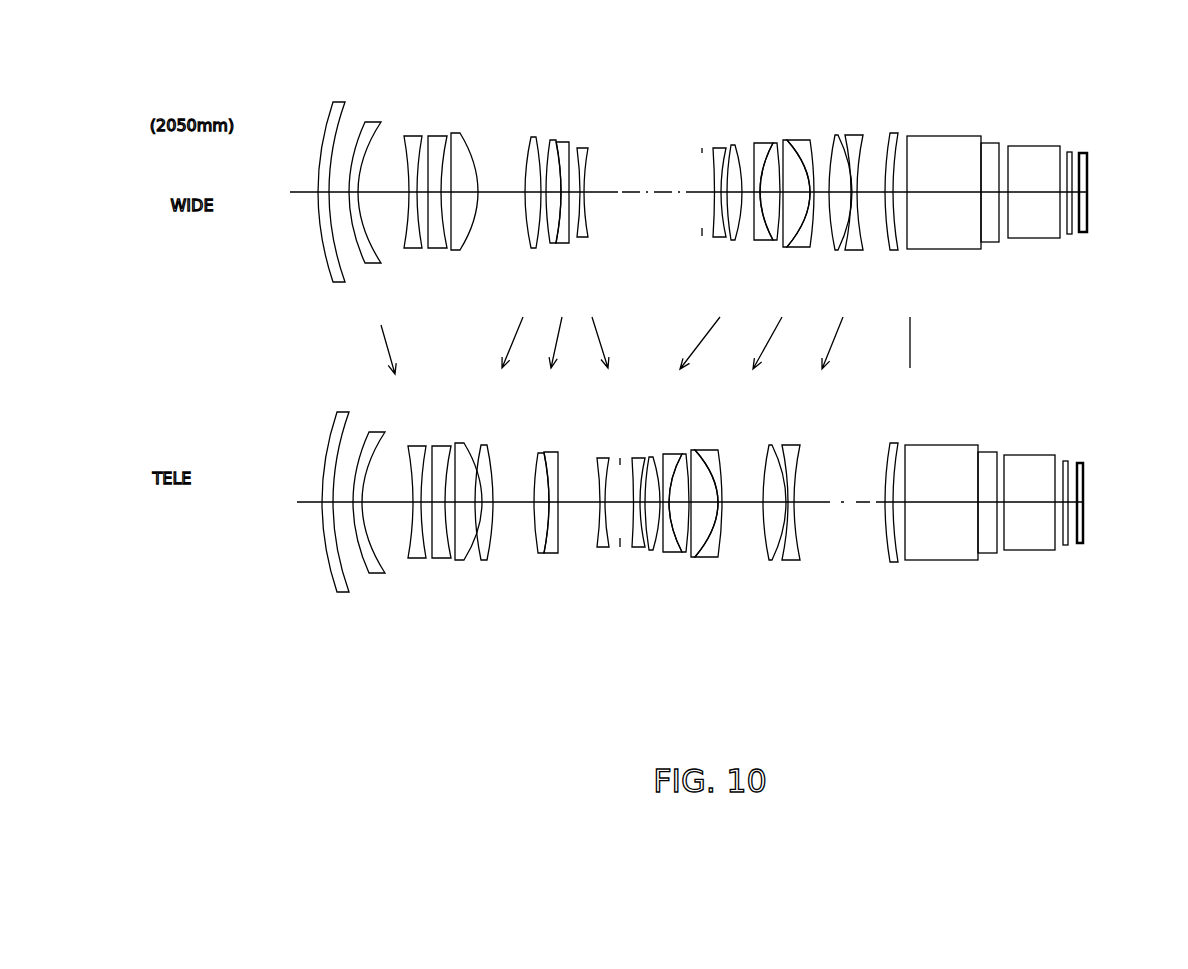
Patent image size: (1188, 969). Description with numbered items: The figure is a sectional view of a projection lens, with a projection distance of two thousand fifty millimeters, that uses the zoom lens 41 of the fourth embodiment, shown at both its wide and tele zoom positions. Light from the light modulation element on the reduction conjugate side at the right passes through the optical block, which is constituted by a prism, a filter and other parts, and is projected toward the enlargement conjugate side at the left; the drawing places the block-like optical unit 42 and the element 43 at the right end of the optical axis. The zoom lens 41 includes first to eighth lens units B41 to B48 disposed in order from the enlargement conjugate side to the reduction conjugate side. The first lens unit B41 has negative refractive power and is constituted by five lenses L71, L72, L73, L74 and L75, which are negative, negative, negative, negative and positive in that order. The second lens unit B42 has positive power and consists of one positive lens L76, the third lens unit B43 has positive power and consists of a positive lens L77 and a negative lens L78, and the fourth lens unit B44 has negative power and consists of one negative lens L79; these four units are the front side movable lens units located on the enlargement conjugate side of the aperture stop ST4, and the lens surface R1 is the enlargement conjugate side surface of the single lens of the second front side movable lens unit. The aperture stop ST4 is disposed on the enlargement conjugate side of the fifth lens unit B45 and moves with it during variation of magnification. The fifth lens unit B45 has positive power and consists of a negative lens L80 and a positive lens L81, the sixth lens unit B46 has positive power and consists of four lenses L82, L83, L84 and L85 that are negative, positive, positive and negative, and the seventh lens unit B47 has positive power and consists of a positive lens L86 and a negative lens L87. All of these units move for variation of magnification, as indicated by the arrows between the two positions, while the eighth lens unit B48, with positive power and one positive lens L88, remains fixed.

The negative lens L71 is at (340, 102).
The negative lens L72 is at (373, 122).
The negative lens L73 is at (410, 136).
The negative lens L74 is at (443, 136).
The positive lens L75 is at (456, 133).
The positive lens L76 is at (537, 137).
The positive lens L77 is at (553, 140).
The negative lens L78 is at (567, 142).
The negative lens L79 is at (590, 148).
The negative lens L80 is at (715, 148).
The positive lens L81 is at (732, 145).
The negative lens L82 is at (760, 143).
The positive lens L83 is at (777, 143).
The positive lens L84 is at (785, 140).
The negative lens L85 is at (800, 140).
The positive lens L86 is at (835, 135).
The negative lens L87 is at (855, 135).
The positive lens L88 is at (893, 133).
The first lens unit B41 is at (401, 178).
The second lens unit B42 is at (526, 195).
The third lens unit B43 is at (564, 179).
The fourth lens unit B44 is at (602, 191).
The fifth lens unit B45 is at (711, 181).
The sixth lens unit B46 is at (777, 160).
The seventh lens unit B47 is at (870, 164).
The eighth lens unit B48 is at (912, 184).
The aperture stop ST4 is at (620, 445).
The lens surface R1 is at (598, 548).
The zoom lens 41 is at (603, 543).
The prism and filter unit 42 is at (1026, 564).
The image sensor 43 is at (1085, 475).